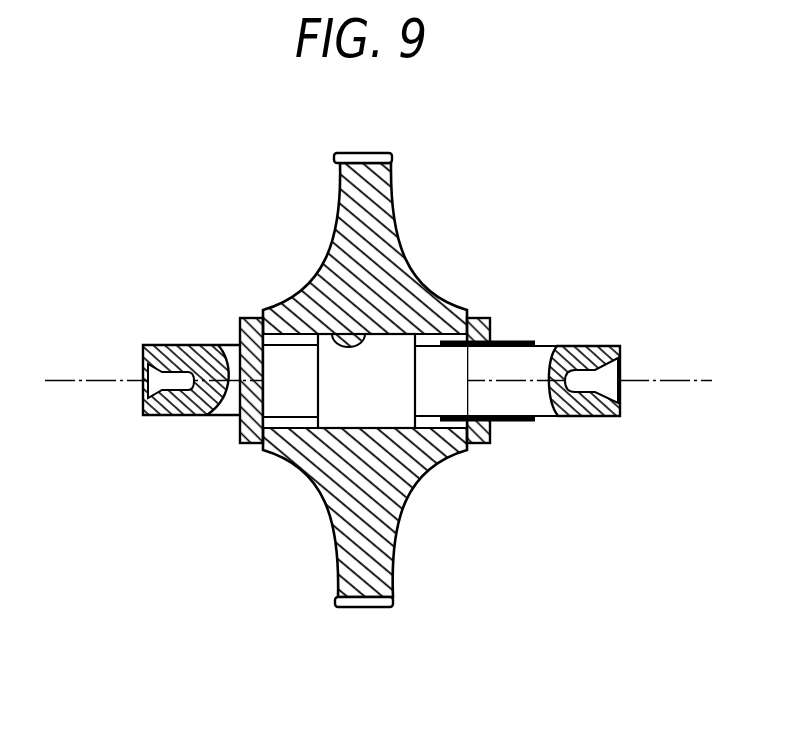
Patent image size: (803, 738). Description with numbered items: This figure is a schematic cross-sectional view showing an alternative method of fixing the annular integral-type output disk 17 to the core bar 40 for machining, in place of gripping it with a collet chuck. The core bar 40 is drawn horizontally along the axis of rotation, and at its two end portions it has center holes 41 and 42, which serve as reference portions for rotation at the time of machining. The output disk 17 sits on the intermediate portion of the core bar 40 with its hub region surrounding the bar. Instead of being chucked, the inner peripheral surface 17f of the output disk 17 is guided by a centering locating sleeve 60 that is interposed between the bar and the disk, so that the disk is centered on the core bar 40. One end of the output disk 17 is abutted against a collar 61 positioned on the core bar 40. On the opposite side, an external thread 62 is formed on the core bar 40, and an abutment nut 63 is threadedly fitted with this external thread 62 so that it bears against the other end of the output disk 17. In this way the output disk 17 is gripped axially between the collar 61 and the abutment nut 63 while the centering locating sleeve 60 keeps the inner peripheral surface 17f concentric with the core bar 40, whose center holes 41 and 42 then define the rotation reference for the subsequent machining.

The output disk 17 is at (375, 192).
The inner peripheral surface 17f is at (334, 332).
The core bar 40 is at (232, 344).
The center hole 41 is at (148, 370).
The center hole 42 is at (616, 370).
The centering locating sleeve 60 is at (378, 410).
The collar 61 is at (245, 318).
The external thread 62 is at (506, 341).
The abutment nut 63 is at (478, 318).